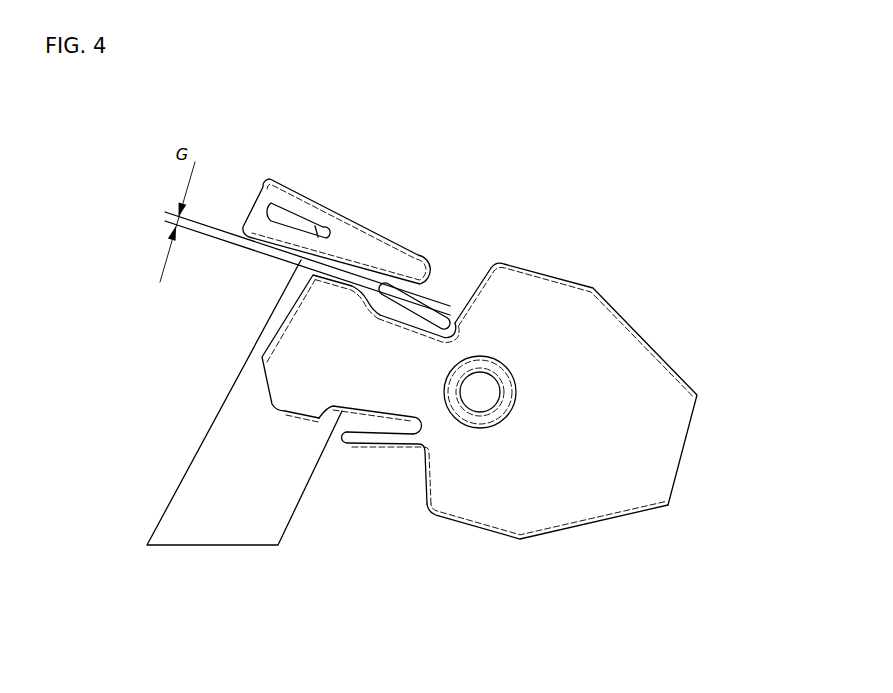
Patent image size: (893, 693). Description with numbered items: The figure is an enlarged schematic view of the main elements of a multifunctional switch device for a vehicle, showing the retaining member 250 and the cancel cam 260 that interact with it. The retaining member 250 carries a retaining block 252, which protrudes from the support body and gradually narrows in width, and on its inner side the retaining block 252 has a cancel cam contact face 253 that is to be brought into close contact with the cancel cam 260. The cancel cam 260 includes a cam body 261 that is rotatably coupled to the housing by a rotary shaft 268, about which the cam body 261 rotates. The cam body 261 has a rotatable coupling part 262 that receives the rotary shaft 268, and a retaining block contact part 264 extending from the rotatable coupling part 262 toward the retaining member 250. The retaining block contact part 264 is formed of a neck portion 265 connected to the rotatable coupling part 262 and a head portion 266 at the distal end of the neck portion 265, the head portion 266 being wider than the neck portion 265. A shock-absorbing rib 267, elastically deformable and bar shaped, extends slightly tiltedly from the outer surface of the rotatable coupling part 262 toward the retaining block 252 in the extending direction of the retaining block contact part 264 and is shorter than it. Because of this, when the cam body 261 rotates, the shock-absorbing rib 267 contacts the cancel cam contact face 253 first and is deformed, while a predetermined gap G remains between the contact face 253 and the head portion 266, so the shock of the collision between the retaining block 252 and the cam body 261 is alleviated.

The retaining member 250 is at (326, 160).
The retaining block 252 is at (357, 240).
The cancel cam contact face 253 is at (261, 242).
The cancel cam 260 is at (656, 212).
The cam body 261 is at (611, 545).
The rotatable coupling part 262 is at (632, 355).
The retaining block contact part 264 is at (290, 432).
The neck portion 265 is at (377, 395).
The head portion 266 is at (307, 362).
The shock-absorbing rib 267 is at (443, 287).
The rotary shaft 268 is at (482, 388).